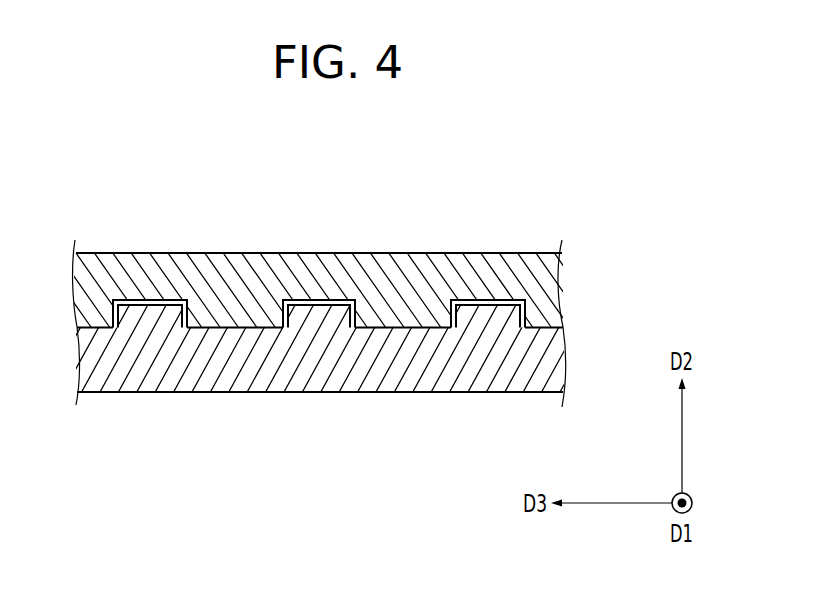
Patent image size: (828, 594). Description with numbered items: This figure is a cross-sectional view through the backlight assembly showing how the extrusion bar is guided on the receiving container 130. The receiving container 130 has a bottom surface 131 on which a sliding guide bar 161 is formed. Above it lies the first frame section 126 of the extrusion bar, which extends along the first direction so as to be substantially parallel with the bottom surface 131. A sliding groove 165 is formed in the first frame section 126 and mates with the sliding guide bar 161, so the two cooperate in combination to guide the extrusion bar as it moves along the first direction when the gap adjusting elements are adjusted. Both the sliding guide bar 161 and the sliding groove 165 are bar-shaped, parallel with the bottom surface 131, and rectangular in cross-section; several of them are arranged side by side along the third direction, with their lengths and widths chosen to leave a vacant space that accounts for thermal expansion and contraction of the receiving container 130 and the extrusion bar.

The first frame section 126 is at (312, 256).
The receiving container 130 is at (308, 383).
The bottom surface 131 is at (232, 328).
The sliding guide bar 161 is at (151, 304).
The sliding groove 165 is at (151, 300).